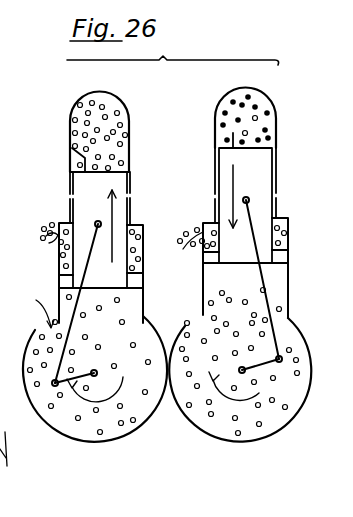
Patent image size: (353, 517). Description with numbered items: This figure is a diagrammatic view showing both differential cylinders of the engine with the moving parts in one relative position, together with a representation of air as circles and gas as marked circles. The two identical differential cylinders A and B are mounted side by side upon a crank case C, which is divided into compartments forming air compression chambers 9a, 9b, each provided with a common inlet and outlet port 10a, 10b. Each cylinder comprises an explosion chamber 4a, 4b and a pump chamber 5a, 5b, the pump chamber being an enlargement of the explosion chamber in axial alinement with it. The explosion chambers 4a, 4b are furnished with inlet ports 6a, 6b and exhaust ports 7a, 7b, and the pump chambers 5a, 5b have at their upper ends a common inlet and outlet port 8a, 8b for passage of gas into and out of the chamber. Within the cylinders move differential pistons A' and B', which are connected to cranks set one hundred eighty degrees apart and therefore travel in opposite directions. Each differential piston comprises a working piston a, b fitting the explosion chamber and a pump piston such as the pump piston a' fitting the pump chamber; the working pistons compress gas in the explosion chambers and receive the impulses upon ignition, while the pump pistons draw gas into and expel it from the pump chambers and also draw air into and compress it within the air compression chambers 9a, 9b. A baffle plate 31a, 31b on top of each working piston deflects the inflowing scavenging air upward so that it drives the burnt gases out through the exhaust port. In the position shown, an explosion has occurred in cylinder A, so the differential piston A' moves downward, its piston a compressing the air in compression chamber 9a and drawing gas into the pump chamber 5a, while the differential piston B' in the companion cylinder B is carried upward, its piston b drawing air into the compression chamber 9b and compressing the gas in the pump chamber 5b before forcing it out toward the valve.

The differential cylinder B is at (92, 272).
The differential cylinder A is at (250, 267).
The explosion chamber 4b is at (108, 107).
The explosion chamber 4a is at (265, 121).
The baffle plate 31b is at (71, 150).
The baffle plate 31a is at (232, 135).
The inlet port 6b is at (68, 197).
The inlet port 6a is at (215, 197).
The exhaust port 7b is at (131, 198).
The exhaust port 7a is at (280, 197).
The working piston b is at (134, 214).
The working piston a is at (261, 205).
The common inlet and outlet port 8b is at (41, 218).
The common inlet and outlet port 8a is at (203, 232).
The pump chamber 5b is at (58, 268).
The pump chamber 5a is at (280, 293).
The differential piston B' is at (113, 274).
The differential piston A' is at (299, 260).
The pump piston a' is at (257, 269).
The common inlet and outlet port 10b is at (56, 303).
The common inlet and outlet port 10a is at (200, 322).
The air compression chamber 9b is at (117, 428).
The air compression chamber 9a is at (279, 418).
The crank case C is at (53, 432).